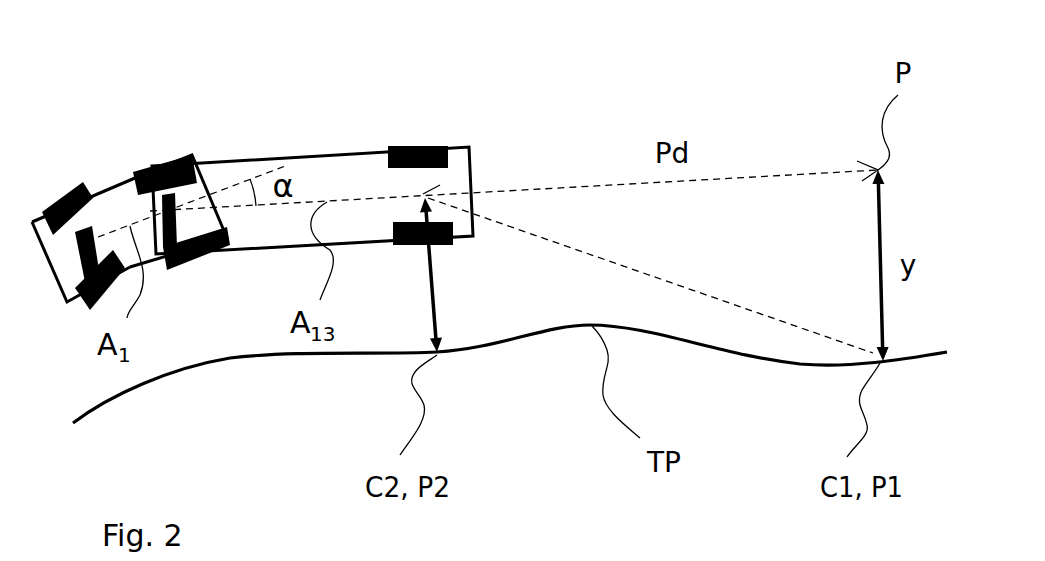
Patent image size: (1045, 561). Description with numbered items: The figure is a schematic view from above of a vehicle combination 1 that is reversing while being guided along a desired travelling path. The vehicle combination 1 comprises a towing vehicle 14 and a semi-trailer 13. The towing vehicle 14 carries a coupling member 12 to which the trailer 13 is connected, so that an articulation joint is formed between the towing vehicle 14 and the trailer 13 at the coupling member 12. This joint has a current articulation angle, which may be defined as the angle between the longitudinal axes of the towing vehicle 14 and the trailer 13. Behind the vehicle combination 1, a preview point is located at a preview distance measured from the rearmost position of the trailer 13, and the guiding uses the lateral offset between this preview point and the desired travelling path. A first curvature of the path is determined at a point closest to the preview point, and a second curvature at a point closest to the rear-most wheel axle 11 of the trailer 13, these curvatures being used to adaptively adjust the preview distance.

The vehicle combination 1 is at (197, 121).
The rear-most wheel axle 11 is at (420, 190).
The coupling member 12 is at (175, 202).
The trailer 13 is at (311, 152).
The towing vehicle 14 is at (117, 186).